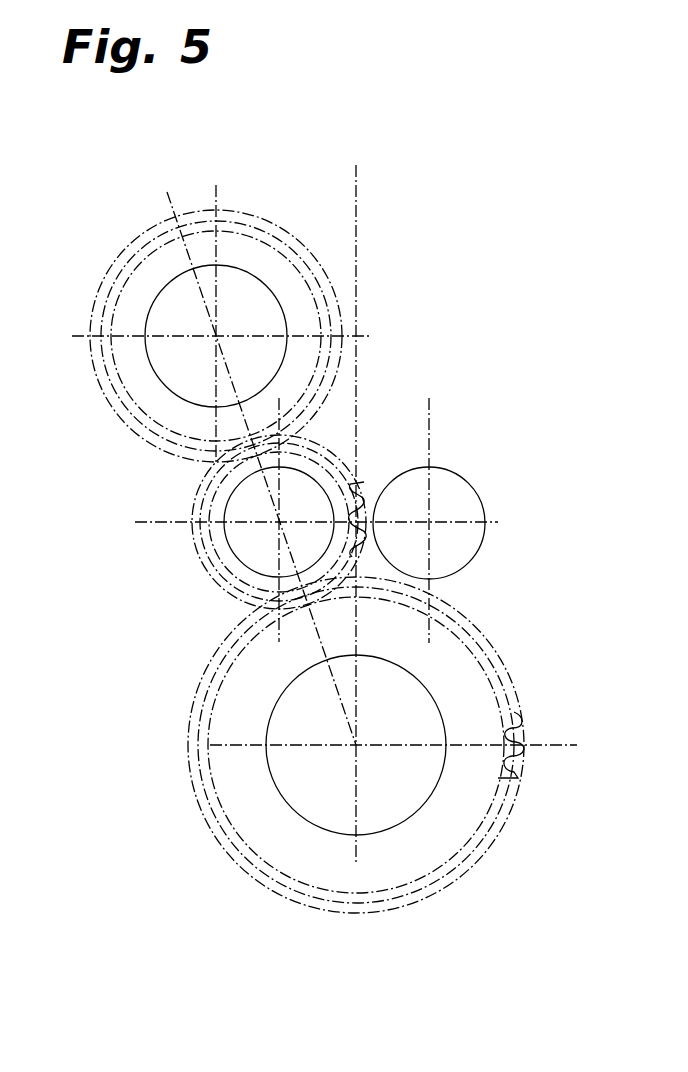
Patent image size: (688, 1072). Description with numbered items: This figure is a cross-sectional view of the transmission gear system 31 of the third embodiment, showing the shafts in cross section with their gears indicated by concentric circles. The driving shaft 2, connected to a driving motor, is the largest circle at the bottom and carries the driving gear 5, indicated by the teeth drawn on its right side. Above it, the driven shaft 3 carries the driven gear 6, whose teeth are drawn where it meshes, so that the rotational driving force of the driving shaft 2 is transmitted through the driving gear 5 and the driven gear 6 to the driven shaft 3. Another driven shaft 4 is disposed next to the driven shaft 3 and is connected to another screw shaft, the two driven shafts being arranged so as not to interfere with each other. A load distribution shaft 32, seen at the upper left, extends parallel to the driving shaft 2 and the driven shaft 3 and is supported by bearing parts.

The transmission gear system 31 is at (410, 170).
The load distribution shaft 32 is at (266, 286).
The driven shaft 3 is at (234, 554).
The driven shaft 4 is at (477, 553).
The driven gear 6 is at (360, 484).
The driving shaft 2 is at (275, 787).
The driving gear 5 is at (518, 778).